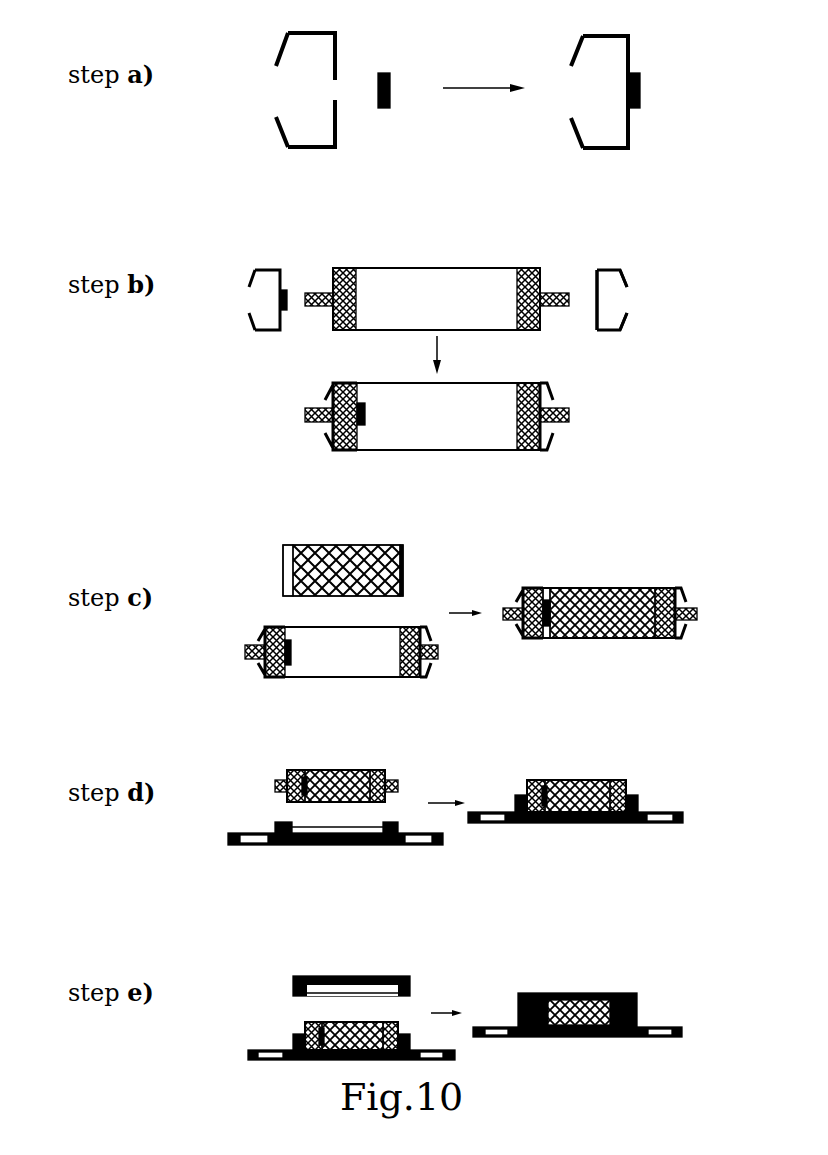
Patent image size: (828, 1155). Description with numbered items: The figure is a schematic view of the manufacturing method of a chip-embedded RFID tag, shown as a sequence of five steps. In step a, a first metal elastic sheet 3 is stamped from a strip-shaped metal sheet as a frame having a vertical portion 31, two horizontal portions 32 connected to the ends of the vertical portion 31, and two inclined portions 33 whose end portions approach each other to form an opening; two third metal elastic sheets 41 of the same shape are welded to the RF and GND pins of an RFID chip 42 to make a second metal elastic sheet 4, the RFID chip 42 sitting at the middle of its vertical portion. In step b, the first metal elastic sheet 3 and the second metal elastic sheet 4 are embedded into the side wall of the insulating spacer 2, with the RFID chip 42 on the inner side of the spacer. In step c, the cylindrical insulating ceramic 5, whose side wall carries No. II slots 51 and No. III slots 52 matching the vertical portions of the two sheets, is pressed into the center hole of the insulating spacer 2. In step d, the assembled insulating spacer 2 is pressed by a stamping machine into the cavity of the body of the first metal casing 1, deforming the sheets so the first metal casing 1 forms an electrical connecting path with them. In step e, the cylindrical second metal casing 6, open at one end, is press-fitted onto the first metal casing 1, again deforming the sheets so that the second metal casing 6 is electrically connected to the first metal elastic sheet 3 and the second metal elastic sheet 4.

The first metal casing 1 is at (378, 845).
The insulating spacer 2 is at (388, 283).
The first metal elastic sheet 3 is at (646, 300).
The second metal elastic sheet 4 is at (630, 55).
The insulating ceramic 5 is at (344, 564).
The second metal casing 6 is at (350, 976).
The vertical portion 31 is at (597, 323).
The horizontal portions 32 is at (610, 268).
The inclined portions 33 is at (632, 320).
The third metal elastic sheets 41 is at (335, 42).
The RFID chip 42 is at (390, 105).
The No. II slots 51 is at (403, 583).
The No. III slots 52 is at (290, 570).